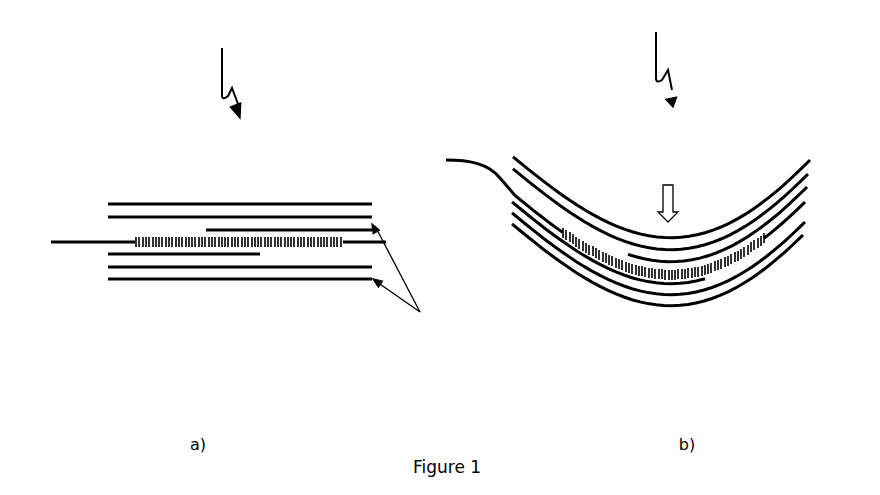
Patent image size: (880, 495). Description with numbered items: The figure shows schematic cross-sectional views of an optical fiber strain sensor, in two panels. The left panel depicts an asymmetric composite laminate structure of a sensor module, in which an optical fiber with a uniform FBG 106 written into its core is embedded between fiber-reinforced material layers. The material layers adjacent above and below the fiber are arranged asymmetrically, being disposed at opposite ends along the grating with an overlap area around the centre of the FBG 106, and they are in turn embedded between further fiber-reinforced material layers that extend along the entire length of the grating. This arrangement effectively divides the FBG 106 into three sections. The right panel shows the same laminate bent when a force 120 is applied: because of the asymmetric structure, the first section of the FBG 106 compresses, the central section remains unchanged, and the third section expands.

The uniform FBG 106 is at (293, 247).
The force 120 is at (676, 203).